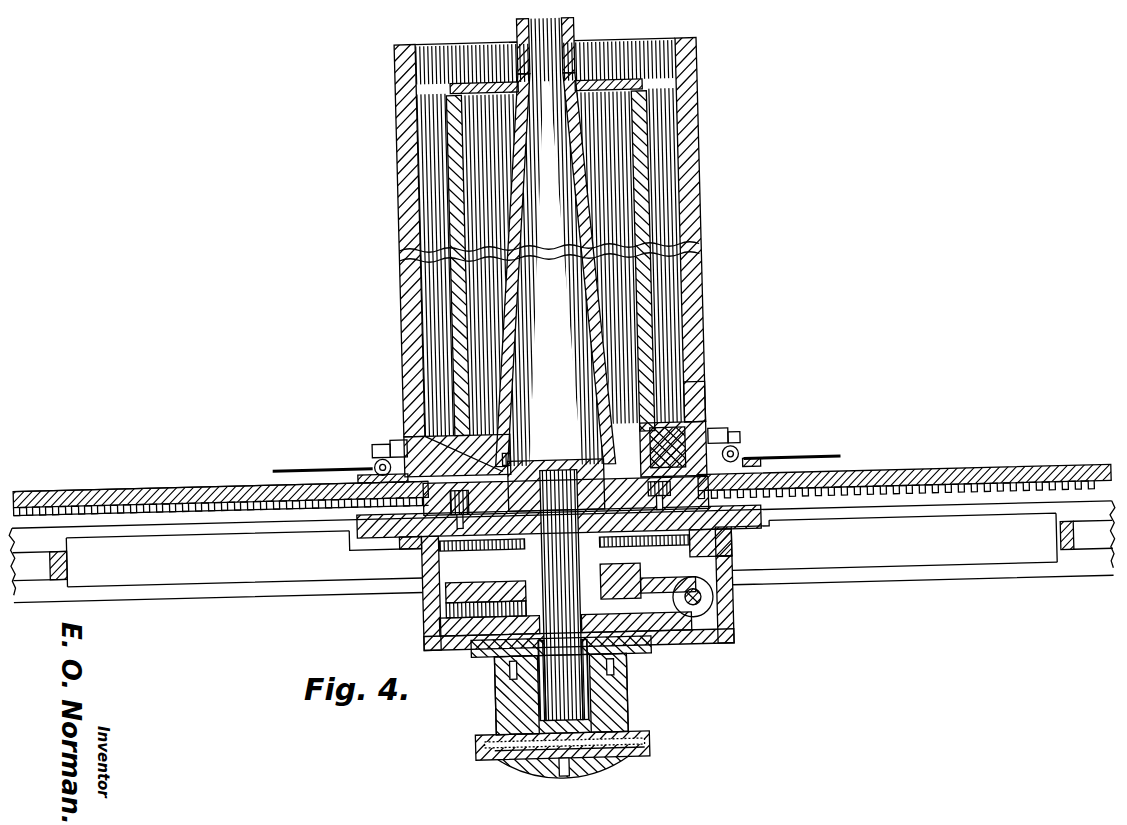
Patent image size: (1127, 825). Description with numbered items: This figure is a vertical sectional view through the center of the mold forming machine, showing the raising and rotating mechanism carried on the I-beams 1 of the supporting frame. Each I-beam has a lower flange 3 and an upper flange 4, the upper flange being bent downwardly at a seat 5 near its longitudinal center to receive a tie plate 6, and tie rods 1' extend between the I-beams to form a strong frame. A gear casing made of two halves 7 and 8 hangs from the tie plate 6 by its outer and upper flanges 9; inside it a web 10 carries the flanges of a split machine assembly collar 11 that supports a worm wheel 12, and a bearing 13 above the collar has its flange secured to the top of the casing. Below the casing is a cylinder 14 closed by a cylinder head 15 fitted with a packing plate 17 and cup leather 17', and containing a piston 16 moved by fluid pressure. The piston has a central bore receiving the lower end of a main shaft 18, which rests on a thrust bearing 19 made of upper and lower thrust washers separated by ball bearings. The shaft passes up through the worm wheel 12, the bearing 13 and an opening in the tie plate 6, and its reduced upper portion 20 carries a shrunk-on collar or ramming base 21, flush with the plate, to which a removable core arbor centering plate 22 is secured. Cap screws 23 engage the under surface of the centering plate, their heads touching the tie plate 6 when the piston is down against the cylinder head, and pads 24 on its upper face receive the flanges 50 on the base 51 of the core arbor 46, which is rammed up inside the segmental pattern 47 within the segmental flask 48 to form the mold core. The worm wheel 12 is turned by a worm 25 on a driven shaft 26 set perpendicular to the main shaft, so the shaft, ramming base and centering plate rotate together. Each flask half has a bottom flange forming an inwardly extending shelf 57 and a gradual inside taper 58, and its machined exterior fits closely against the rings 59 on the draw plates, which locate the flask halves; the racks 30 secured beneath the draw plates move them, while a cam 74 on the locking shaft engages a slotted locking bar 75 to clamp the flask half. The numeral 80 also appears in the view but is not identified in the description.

The I-beam 1 is at (562, 515).
The tie rod 1' is at (563, 565).
The lower flange 3 is at (906, 574).
The upper flange 4 is at (924, 513).
The downwardly bent portion 5 is at (358, 548).
The tie plate 6 is at (357, 517).
The gear casing half 7 is at (739, 618).
The gear casing half 8 is at (428, 614).
The outer and upper flanges 9 is at (414, 544).
The web 10 is at (628, 581).
The split machine assembly collar 11 is at (644, 551).
The worm wheel 12 is at (667, 573).
The bearing 13 is at (481, 555).
The cylinder 14 is at (631, 710).
The cylinder head 15 is at (615, 762).
The piston 16 is at (601, 700).
The packing plate 17 is at (562, 766).
The cup leather 17' is at (599, 730).
The main shaft 18 is at (553, 641).
The thrust bearing 19 is at (521, 740).
The reduced portion 20 is at (560, 470).
The collar or ramming base 21 is at (486, 585).
The core arbor centering plate 22 is at (681, 498).
The cap screws 23 is at (453, 514).
The pads 24 is at (680, 428).
The worm 25 is at (734, 578).
The shaft 26 is at (710, 624).
The rack 30 is at (933, 473).
The core arbor 46 is at (549, 242).
The segmental pattern 47 is at (623, 297).
The segmental flask 48 is at (703, 212).
The flanges 50 is at (509, 457).
The base 51 is at (401, 440).
The shelf 57 is at (707, 393).
The taper 58 is at (741, 432).
The rings 59 is at (380, 457).
The cam 74 is at (372, 459).
The locking bar 75 is at (385, 437).
The rack strip 80 is at (164, 479).